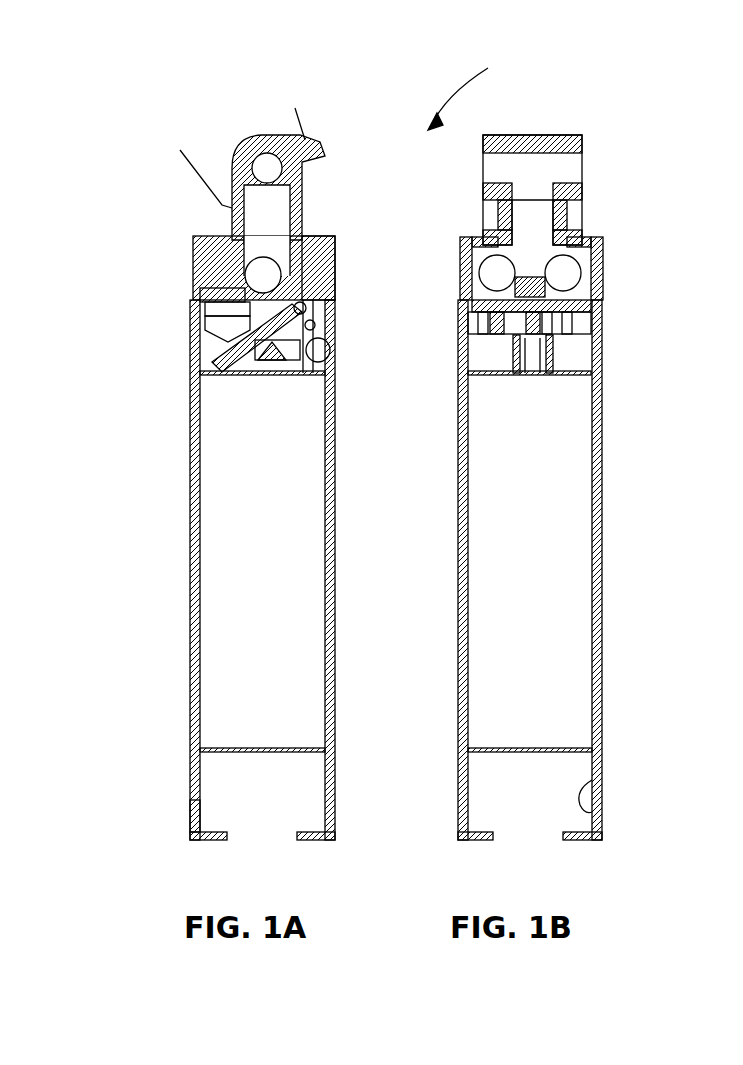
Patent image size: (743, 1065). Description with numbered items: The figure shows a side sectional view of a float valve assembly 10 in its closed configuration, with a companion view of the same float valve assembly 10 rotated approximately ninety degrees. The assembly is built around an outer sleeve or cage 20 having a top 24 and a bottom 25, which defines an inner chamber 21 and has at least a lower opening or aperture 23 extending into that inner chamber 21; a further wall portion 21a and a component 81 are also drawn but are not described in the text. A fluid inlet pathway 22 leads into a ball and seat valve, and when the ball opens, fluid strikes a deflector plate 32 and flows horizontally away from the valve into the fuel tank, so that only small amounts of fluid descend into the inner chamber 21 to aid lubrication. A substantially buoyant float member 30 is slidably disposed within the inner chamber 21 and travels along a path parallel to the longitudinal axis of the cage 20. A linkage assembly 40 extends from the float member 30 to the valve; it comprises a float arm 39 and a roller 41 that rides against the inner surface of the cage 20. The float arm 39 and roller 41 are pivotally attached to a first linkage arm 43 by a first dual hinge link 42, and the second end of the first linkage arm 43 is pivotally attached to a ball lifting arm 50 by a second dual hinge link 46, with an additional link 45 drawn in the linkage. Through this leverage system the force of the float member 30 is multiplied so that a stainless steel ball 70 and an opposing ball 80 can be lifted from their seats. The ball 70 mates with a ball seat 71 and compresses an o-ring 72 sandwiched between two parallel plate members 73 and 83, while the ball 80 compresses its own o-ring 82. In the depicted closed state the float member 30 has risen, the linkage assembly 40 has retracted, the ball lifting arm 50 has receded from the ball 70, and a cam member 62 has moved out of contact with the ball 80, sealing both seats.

In FIG. 1B, the float valve assembly 10 is at (472, 95).
In FIG. 1B, the outer sleeve or cage 20 is at (603, 642).
In FIG. 1B, the inner chamber 21 is at (583, 352).
In FIG. 1B, the side wall portion 21a is at (603, 808).
In FIG. 1B, the fluid inlet pathway 22 is at (555, 170).
In FIG. 1A, the lower opening or aperture 23 is at (281, 834).
In FIG. 1B, the lower opening or aperture 23 is at (552, 834).
In FIG. 1A, the top 24 is at (195, 262).
In FIG. 1A, the bottom 25 is at (188, 816).
In FIG. 1A, the float member 30 is at (295, 571).
In FIG. 1B, the deflector plate 32 is at (470, 320).
In FIG. 1A, the float arm 39 is at (335, 355).
In FIG. 1B, the float arm 39 is at (528, 375).
In FIG. 1B, the linkage assembly 40 is at (540, 360).
In FIG. 1A, the roller 41 is at (340, 362).
In FIG. 1A, the first dual hinge link 42 is at (335, 330).
In FIG. 1A, the first linkage arm 43 is at (275, 370).
In FIG. 1A, the link 45 is at (243, 375).
In FIG. 1A, the second dual hinge link 46 is at (200, 352).
In FIG. 1A, the ball lifting arm 50 is at (200, 322).
In FIG. 1A, the cam member 62 is at (200, 302).
In FIG. 1A, the stainless steel ball 70 is at (285, 266).
In FIG. 1B, the stainless steel ball 70 is at (470, 250).
In FIG. 1A, the ball seat 71 is at (200, 245).
In FIG. 1A, the o-ring 72 is at (197, 281).
In FIG. 1A, the plate member 73 is at (337, 265).
In FIG. 1B, the ball 80 is at (603, 252).
In FIG. 1B, the spacer 81 is at (605, 270).
In FIG. 1B, the o-ring 82 is at (600, 292).
In FIG. 1B, the plate member 83 is at (600, 300).